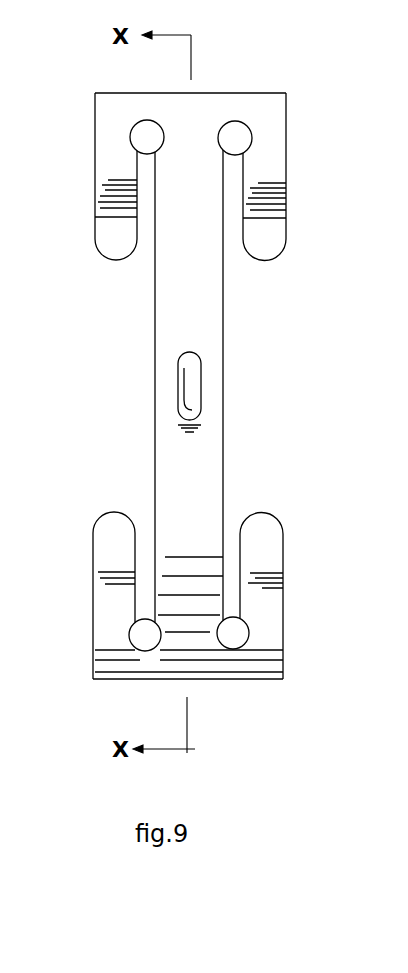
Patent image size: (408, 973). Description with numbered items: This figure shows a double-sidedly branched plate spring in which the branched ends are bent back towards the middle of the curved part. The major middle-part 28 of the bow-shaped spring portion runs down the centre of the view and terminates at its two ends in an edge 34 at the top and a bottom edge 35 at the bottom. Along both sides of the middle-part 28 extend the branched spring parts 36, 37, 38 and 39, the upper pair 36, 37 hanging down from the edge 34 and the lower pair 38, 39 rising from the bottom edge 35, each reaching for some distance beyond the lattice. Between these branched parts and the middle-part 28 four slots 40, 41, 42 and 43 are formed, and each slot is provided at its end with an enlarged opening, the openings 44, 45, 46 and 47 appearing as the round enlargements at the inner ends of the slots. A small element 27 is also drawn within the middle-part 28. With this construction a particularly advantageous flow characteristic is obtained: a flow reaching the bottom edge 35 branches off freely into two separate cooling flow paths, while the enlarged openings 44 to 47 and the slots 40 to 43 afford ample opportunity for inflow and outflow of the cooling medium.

The electrode 27 is at (201, 382).
The major middle-part 28 is at (160, 320).
The edge 34 is at (210, 92).
The bottom edge 35 is at (228, 681).
The branched spring part 36 is at (95, 157).
The branched spring part 37 is at (286, 155).
The branched spring part 38 is at (93, 590).
The branched spring part 39 is at (283, 598).
The slot 40 is at (147, 227).
The slot 41 is at (233, 220).
The slot 42 is at (145, 547).
The slot 43 is at (233, 552).
The enlarged opening 44 is at (142, 120).
The enlarged opening 45 is at (247, 127).
The enlarged opening 46 is at (145, 650).
The enlarged opening 47 is at (247, 643).